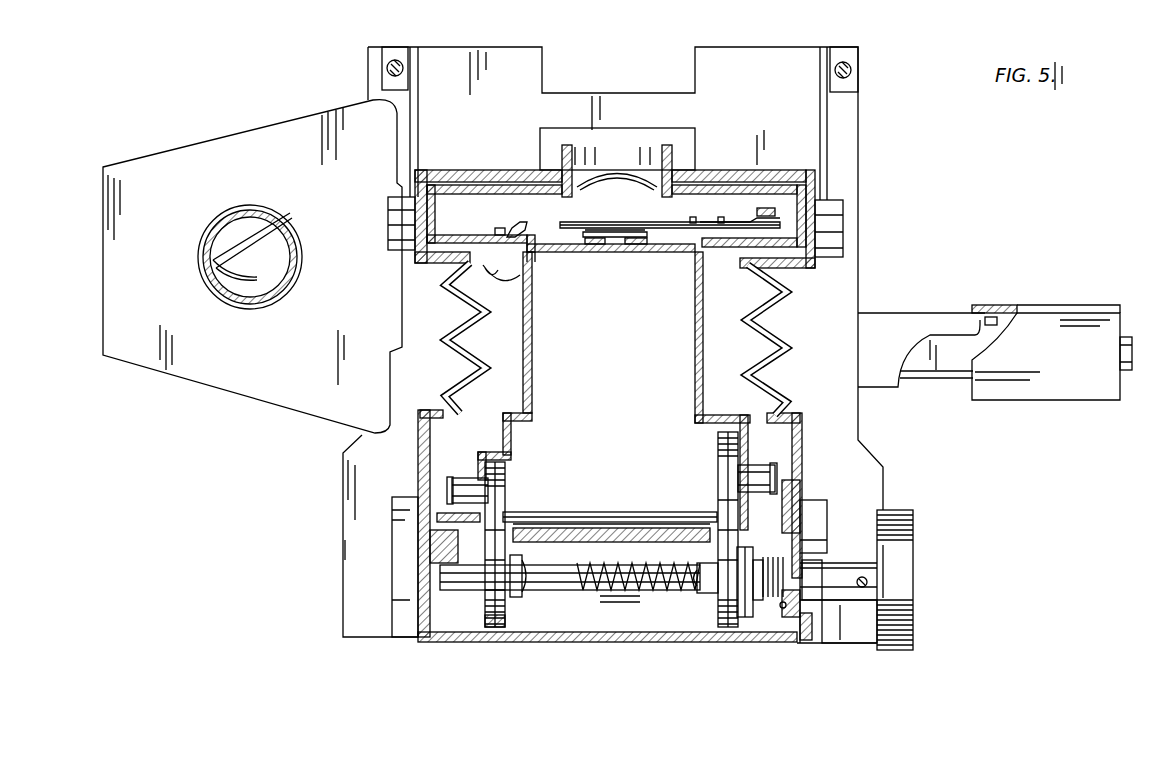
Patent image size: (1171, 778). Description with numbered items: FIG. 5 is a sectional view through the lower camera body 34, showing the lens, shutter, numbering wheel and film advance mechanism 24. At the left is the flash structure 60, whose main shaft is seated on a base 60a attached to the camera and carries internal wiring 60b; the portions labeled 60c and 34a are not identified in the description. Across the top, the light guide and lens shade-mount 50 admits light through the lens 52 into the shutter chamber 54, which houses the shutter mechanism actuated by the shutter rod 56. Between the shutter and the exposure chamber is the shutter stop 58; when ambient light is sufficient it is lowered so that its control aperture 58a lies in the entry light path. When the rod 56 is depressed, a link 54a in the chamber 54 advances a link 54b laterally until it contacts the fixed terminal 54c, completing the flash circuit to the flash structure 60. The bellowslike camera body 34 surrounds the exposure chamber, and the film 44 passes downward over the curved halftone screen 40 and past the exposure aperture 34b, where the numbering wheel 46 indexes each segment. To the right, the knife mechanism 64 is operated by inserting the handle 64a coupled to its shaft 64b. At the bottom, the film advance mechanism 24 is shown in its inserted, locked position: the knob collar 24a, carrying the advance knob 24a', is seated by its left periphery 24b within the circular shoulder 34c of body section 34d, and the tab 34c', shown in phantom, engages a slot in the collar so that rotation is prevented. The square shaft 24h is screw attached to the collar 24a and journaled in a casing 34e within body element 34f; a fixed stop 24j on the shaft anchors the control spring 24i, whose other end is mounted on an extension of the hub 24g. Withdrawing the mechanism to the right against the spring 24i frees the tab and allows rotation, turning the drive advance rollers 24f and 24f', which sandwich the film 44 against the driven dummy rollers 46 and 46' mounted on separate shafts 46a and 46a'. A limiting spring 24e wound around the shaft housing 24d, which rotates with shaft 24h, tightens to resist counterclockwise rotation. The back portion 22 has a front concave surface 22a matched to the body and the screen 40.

The back portion 22 is at (616, 652).
The front concave surface 22a is at (613, 530).
The film advance mechanism 24 is at (926, 527).
The knob collar 24a is at (838, 618).
The advance knob 24a' is at (931, 580).
The left periphery 24b is at (822, 565).
The shaft housing 24d is at (730, 600).
The limiting spring 24e is at (752, 617).
The drive advance roller 24f is at (712, 622).
The drive advance roller 24f' is at (491, 645).
The hub 24g is at (675, 597).
The shaft 24h is at (545, 582).
The control spring 24i is at (600, 600).
The fixed stop 24j is at (578, 590).
The camera body 34 is at (770, 320).
The chamber 34a is at (635, 381).
The exposure aperture 34b is at (583, 258).
The circular shoulder 34c is at (811, 558).
The tab 34c' is at (812, 643).
The body section 34d is at (790, 625).
The casing 34e is at (425, 588).
The body element 34f is at (428, 550).
The curved halftone screen 40 is at (556, 510).
The film 44 is at (577, 528).
The driven roller 46 is at (701, 528).
The driven roller 46' is at (516, 531).
The shaft 46a is at (767, 464).
The shaft 46a' is at (460, 469).
The light guide and lens shade-mount 50 is at (672, 148).
The lens 52 is at (620, 180).
The shutter chamber 54 is at (690, 205).
The link 54a is at (692, 232).
The link 54b is at (535, 218).
The fixed terminal 54c is at (497, 230).
The shutter rod 56 is at (778, 212).
The shutter stop 58 is at (600, 235).
The control aperture 58a is at (622, 245).
The flash structure 60 is at (246, 235).
The base 60a is at (247, 391).
The internal wiring 60b is at (268, 243).
The bellows 60c is at (478, 286).
The knife mechanism 64 is at (1058, 322).
The handle 64a is at (1037, 392).
The shaft 64b is at (940, 370).